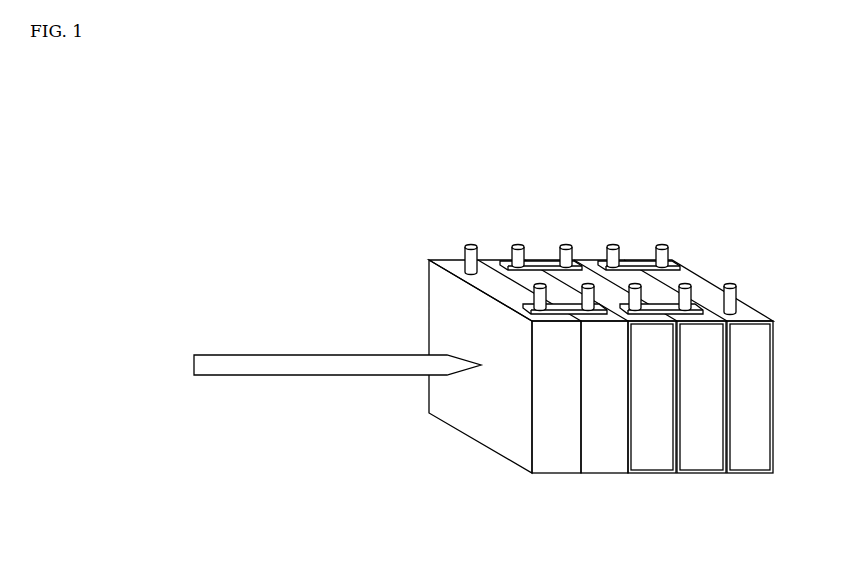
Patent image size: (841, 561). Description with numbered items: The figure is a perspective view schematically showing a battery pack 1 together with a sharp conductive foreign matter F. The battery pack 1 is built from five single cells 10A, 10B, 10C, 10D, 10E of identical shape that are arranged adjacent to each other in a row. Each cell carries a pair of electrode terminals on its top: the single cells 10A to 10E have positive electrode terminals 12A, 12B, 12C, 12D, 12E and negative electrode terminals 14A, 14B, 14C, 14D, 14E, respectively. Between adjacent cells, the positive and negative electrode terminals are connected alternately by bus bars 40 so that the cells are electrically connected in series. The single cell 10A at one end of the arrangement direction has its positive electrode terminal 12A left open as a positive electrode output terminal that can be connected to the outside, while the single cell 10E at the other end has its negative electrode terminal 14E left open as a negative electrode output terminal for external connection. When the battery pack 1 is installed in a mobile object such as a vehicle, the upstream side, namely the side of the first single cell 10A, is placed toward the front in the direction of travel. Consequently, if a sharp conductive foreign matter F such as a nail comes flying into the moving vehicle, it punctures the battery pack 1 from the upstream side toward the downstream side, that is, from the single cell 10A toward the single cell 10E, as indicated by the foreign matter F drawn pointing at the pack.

The battery pack 1 is at (358, 216).
The single cell 10A is at (550, 474).
The single cell 10B is at (602, 474).
The single cell 10C is at (647, 474).
The single cell 10D is at (697, 474).
The single cell 10E is at (747, 474).
The positive electrode terminal 12A is at (471, 244).
The positive electrode terminal 12B is at (584, 312).
The positive electrode terminal 12C is at (566, 244).
The positive electrode terminal 12D is at (689, 314).
The positive electrode terminal 12E is at (662, 244).
The negative electrode terminal 14A is at (533, 294).
The negative electrode terminal 14B is at (518, 244).
The negative electrode terminal 14C is at (640, 313).
The negative electrode terminal 14D is at (613, 244).
The negative electrode terminal 14E is at (736, 287).
The bus bar 40 is at (563, 306).
The conductive foreign matter F is at (308, 357).